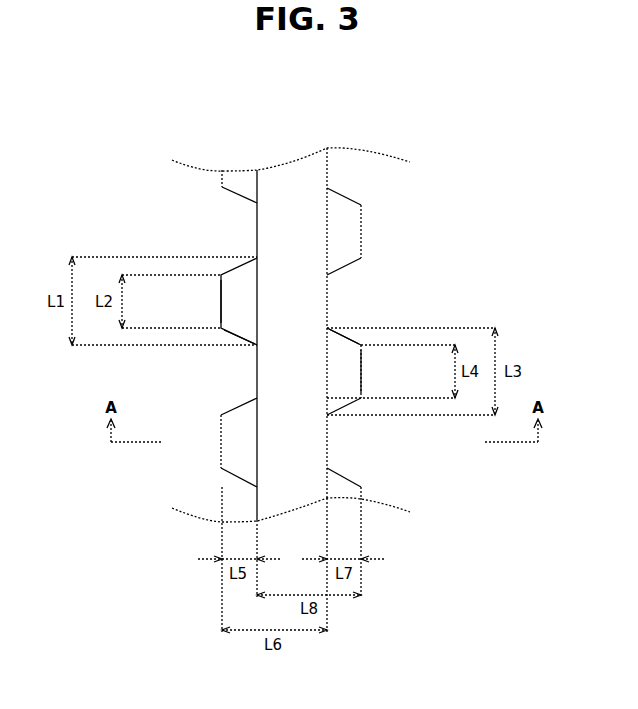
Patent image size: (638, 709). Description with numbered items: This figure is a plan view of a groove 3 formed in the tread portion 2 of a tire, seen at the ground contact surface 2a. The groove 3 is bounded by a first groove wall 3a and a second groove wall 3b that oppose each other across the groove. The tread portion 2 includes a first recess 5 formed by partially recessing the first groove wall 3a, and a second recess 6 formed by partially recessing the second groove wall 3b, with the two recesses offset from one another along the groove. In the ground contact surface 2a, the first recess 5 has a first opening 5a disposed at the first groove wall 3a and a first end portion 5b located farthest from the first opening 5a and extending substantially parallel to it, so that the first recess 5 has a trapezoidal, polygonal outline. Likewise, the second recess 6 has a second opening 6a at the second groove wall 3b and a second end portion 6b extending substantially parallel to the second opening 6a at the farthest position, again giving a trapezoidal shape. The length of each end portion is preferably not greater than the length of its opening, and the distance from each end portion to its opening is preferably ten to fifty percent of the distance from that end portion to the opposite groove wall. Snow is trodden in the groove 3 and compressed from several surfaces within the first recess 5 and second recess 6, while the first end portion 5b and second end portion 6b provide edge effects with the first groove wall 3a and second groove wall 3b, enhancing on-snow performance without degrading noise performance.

The tread portion 2 is at (401, 127).
The ground contact surface 2a is at (198, 185).
The groove 3 is at (288, 197).
The first groove wall 3a is at (362, 229).
The second groove wall 3b is at (325, 444).
The first recess 5 is at (240, 300).
The first opening 5a is at (254, 321).
The first end portion 5b is at (218, 300).
The second recess 6 is at (343, 355).
The second opening 6a is at (330, 376).
The second end portion 6b is at (366, 362).